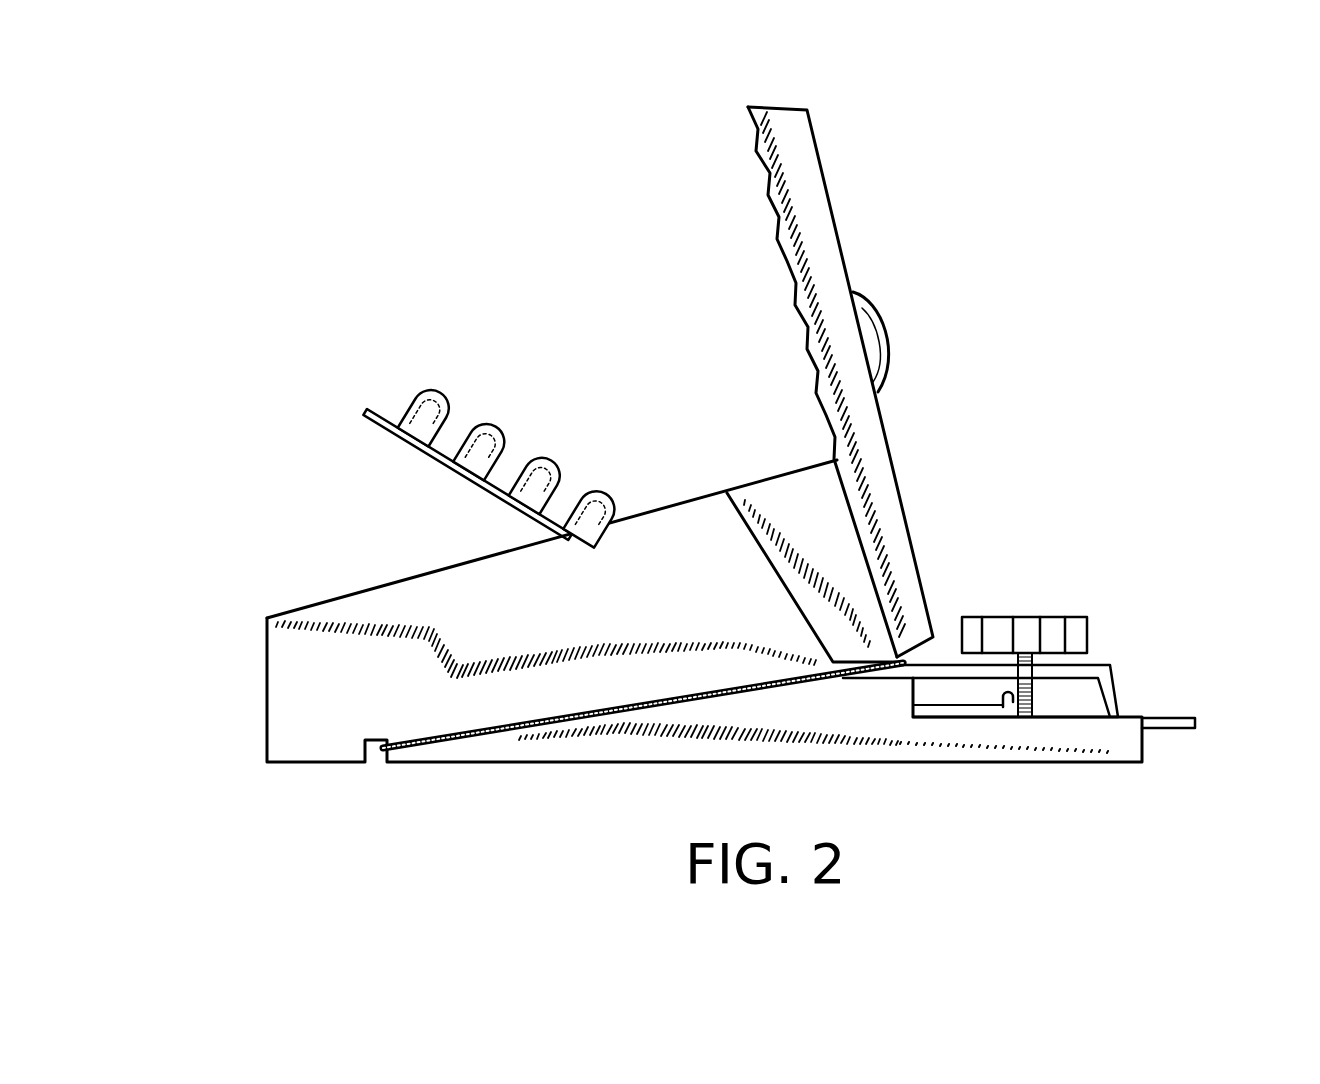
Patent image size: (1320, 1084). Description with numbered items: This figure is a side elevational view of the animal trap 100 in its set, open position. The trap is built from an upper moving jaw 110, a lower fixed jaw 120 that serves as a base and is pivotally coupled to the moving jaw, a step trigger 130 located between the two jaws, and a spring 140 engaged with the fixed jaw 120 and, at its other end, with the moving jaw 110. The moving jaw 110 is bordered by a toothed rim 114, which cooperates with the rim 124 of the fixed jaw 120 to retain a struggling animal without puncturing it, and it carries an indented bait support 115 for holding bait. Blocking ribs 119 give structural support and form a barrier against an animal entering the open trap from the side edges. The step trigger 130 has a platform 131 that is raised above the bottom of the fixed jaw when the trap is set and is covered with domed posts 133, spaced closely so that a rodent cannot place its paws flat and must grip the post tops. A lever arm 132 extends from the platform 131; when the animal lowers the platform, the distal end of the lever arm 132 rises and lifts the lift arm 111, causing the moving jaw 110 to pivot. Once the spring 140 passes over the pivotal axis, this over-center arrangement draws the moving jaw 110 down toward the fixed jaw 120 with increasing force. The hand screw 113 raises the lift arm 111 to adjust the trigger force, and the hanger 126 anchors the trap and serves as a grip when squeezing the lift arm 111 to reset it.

The animal trap 100 is at (1170, 320).
The upper moving jaw 110 is at (817, 382).
The lift arm 111 is at (1108, 690).
The hand screw 113 is at (1050, 625).
The toothed rim 114 is at (760, 168).
The bait support 115 is at (872, 332).
The blocking ribs 119 is at (818, 478).
The lower fixed jaw 120 is at (262, 667).
The rim 124 is at (549, 630).
The hanger 126 is at (1180, 718).
The step trigger 130 is at (472, 452).
The platform 131 is at (467, 474).
The lever arm 132 is at (1003, 717).
The posts 133 is at (509, 465).
The spring 140 is at (465, 748).